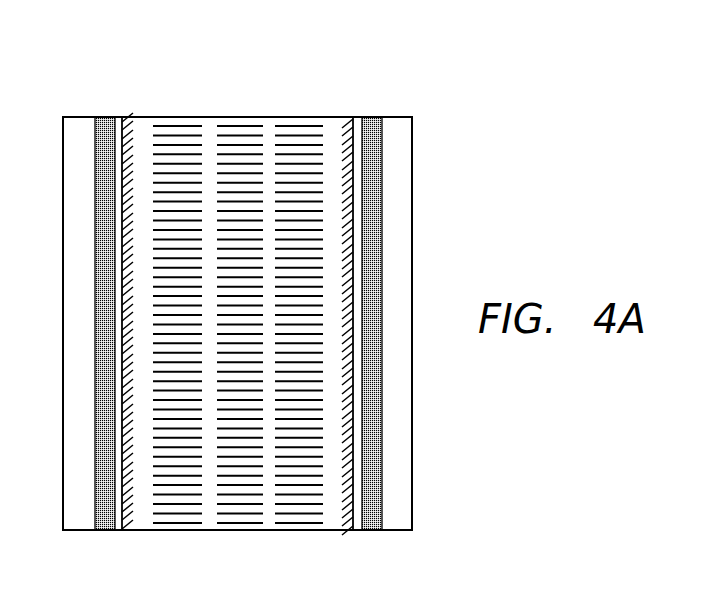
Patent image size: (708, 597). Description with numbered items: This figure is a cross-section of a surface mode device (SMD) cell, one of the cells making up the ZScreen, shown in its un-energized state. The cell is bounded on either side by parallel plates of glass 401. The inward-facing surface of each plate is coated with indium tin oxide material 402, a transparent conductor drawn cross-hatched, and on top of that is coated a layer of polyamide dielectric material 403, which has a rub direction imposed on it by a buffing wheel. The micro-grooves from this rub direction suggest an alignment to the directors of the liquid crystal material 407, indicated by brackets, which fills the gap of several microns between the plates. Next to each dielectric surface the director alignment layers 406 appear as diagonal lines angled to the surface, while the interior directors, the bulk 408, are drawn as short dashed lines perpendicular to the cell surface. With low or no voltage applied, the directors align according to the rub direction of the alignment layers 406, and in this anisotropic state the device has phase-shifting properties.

The parallel plates of glass 401 is at (68, 537).
The indium tin oxide material 402 is at (101, 112).
The polyamide dielectric material 403 is at (120, 539).
The director alignment layers 406 is at (121, 109).
The liquid crystal material 407 is at (127, 117).
The bulk directors of the cell 408 is at (217, 480).